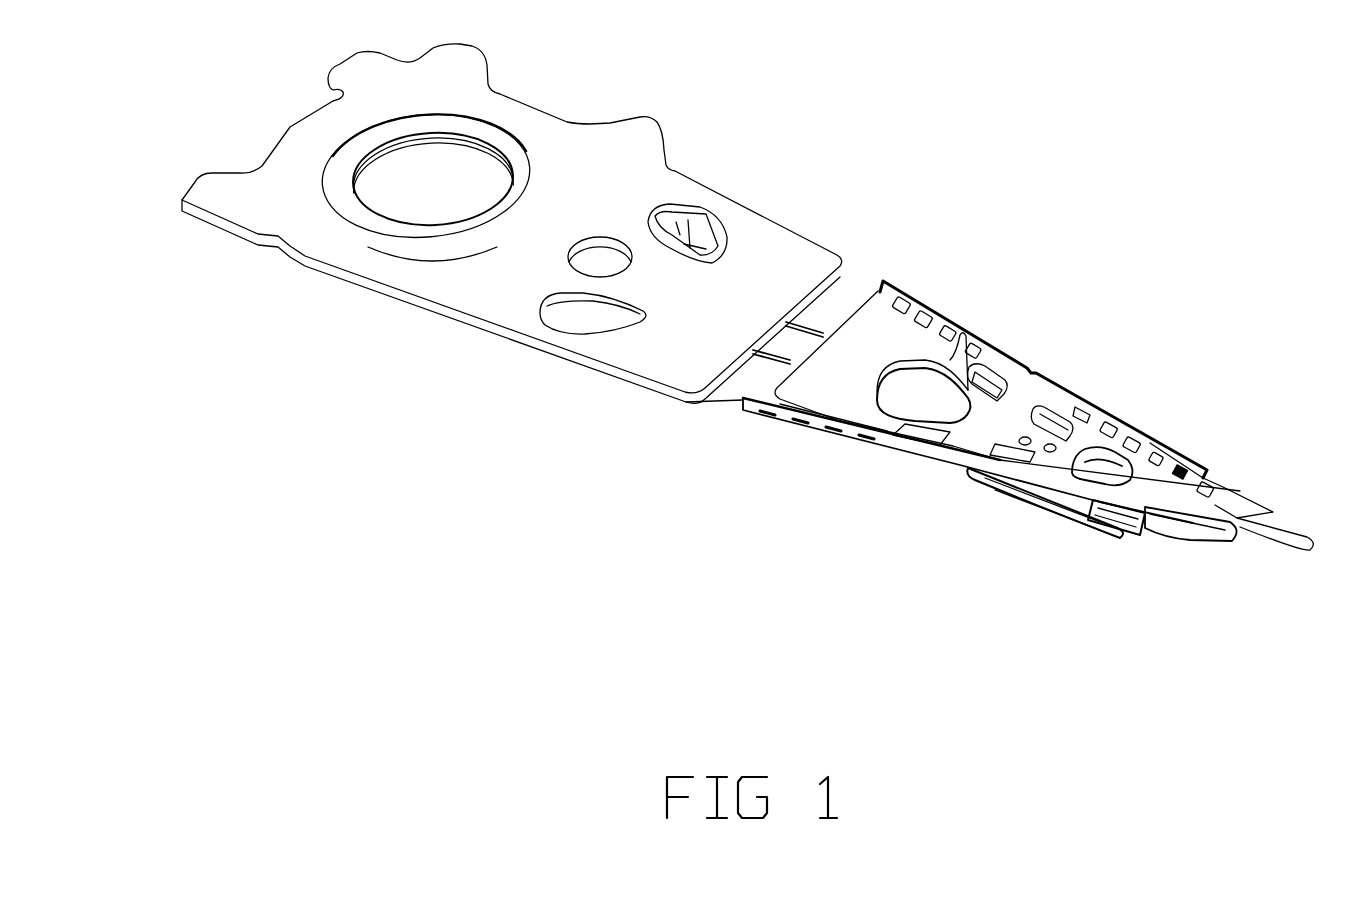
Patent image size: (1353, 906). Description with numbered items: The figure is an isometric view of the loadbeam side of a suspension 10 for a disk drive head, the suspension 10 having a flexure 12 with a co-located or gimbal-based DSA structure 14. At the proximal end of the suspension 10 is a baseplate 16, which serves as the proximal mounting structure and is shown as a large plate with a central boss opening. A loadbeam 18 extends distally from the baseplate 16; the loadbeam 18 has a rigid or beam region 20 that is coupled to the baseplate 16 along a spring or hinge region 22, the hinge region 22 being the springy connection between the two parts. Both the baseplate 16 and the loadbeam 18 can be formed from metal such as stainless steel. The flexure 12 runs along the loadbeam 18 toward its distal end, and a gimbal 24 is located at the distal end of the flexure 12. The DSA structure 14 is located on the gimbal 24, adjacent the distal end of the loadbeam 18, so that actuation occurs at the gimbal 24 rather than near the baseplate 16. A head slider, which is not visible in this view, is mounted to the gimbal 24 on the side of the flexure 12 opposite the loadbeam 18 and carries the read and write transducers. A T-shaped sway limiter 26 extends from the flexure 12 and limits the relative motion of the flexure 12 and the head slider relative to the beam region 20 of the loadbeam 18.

The suspension 10 is at (842, 181).
The flexure 12 is at (967, 470).
The DSA structure 14 is at (1075, 535).
The baseplate 16 is at (628, 135).
The loadbeam 18 is at (977, 315).
The beam region 20 is at (1022, 400).
The hinge region 22 is at (717, 402).
The gimbal 24 is at (1022, 504).
The sway limiter 26 is at (1123, 428).